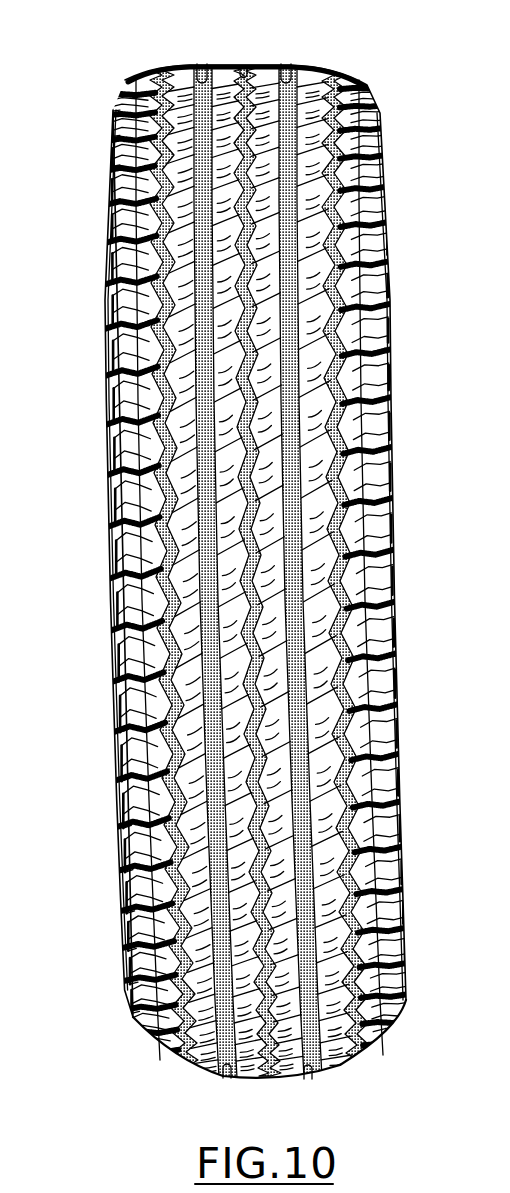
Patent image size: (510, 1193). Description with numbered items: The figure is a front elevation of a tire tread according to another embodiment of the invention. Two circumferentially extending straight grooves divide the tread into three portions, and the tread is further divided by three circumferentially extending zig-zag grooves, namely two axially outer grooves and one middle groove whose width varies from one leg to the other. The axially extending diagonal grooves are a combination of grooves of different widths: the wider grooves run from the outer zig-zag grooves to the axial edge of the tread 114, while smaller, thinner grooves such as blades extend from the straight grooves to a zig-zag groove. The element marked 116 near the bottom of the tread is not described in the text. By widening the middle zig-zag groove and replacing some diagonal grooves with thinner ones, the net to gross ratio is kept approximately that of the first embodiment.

The axial edge of the tread 114 is at (107, 498).
The tread bottom edge / rotation reference 116 is at (292, 1080).